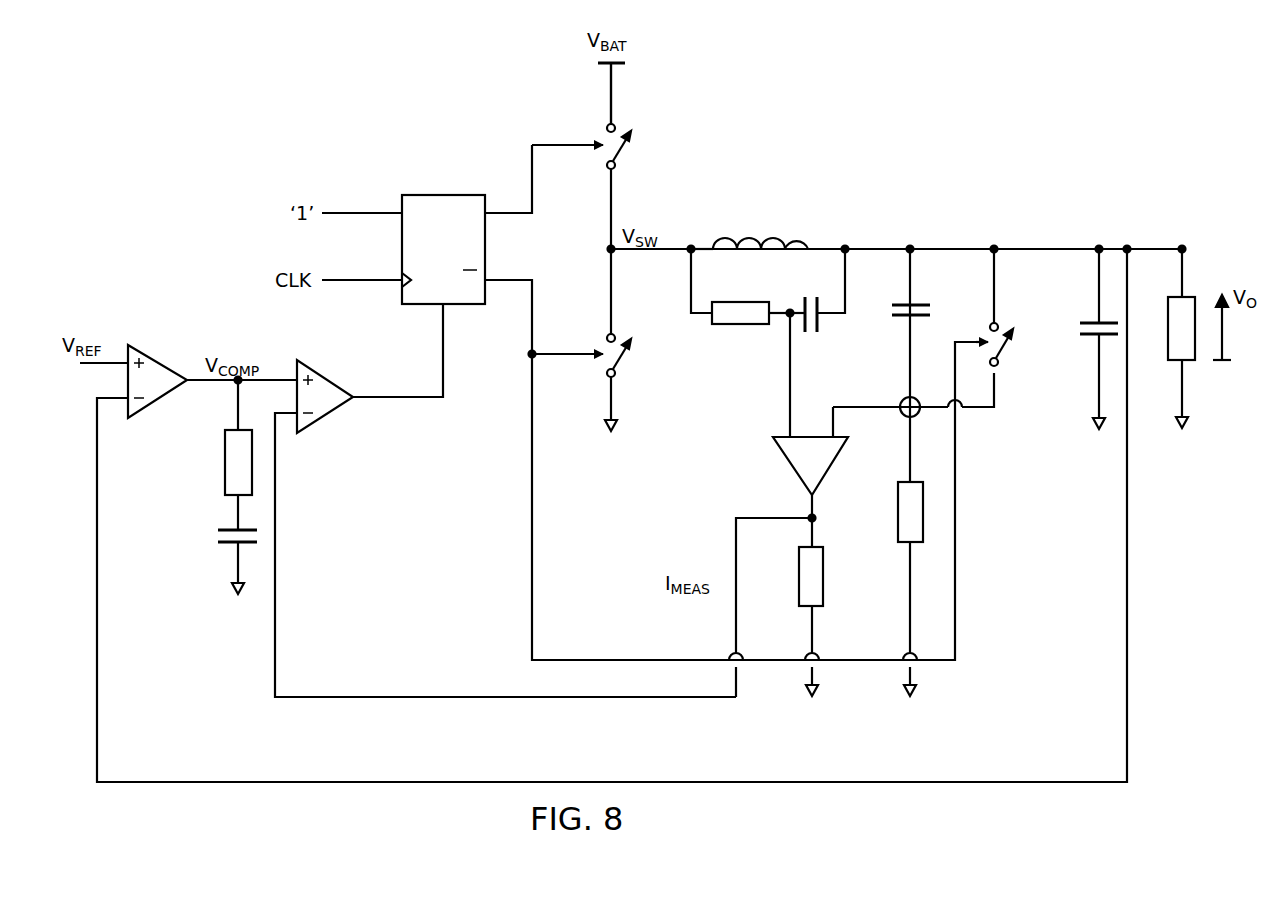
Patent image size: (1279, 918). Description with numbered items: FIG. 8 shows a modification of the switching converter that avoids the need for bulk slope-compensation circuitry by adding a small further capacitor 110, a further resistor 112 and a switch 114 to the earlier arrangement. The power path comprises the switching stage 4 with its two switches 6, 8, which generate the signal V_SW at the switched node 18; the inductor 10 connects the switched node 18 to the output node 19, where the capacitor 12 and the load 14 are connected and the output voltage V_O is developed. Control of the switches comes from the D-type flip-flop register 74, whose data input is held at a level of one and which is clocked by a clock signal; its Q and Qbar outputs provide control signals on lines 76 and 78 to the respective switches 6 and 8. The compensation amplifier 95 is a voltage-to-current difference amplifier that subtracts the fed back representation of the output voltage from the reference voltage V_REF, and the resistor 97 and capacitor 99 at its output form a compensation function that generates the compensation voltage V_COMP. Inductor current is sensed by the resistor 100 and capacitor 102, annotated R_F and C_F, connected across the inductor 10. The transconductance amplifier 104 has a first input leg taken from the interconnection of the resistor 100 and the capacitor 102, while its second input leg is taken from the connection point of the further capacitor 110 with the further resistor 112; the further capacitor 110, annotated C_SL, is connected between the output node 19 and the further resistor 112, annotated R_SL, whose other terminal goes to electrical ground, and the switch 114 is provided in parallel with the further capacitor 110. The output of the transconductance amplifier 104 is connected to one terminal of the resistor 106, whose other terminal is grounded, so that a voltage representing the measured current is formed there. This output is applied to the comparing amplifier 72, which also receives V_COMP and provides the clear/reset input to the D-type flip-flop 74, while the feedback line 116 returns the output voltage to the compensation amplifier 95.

The switching stage 4 is at (638, 99).
The switch 6 is at (622, 148).
The switch 8 is at (622, 357).
The inductor 10 is at (757, 242).
The capacitor 12 is at (1098, 320).
The load 14 is at (1176, 362).
The switched node 18 is at (608, 247).
The output node 19 is at (1184, 246).
The amplifier 72 is at (328, 372).
The D-type flip-flop register 74 is at (432, 193).
The line 76 is at (578, 142).
The line 78 is at (544, 352).
The compensation amplifier 95 is at (150, 352).
The resistor 97 is at (226, 452).
The capacitor 99 is at (231, 528).
The resistor 100 is at (740, 326).
The capacitor 102 is at (818, 330).
The transconductance amplifier 104 is at (790, 462).
The resistor 106 is at (818, 610).
The further capacitor 110 is at (920, 301).
The further resistor 112 is at (908, 480).
The switch 114 is at (1004, 346).
The feedback line 116 is at (368, 698).